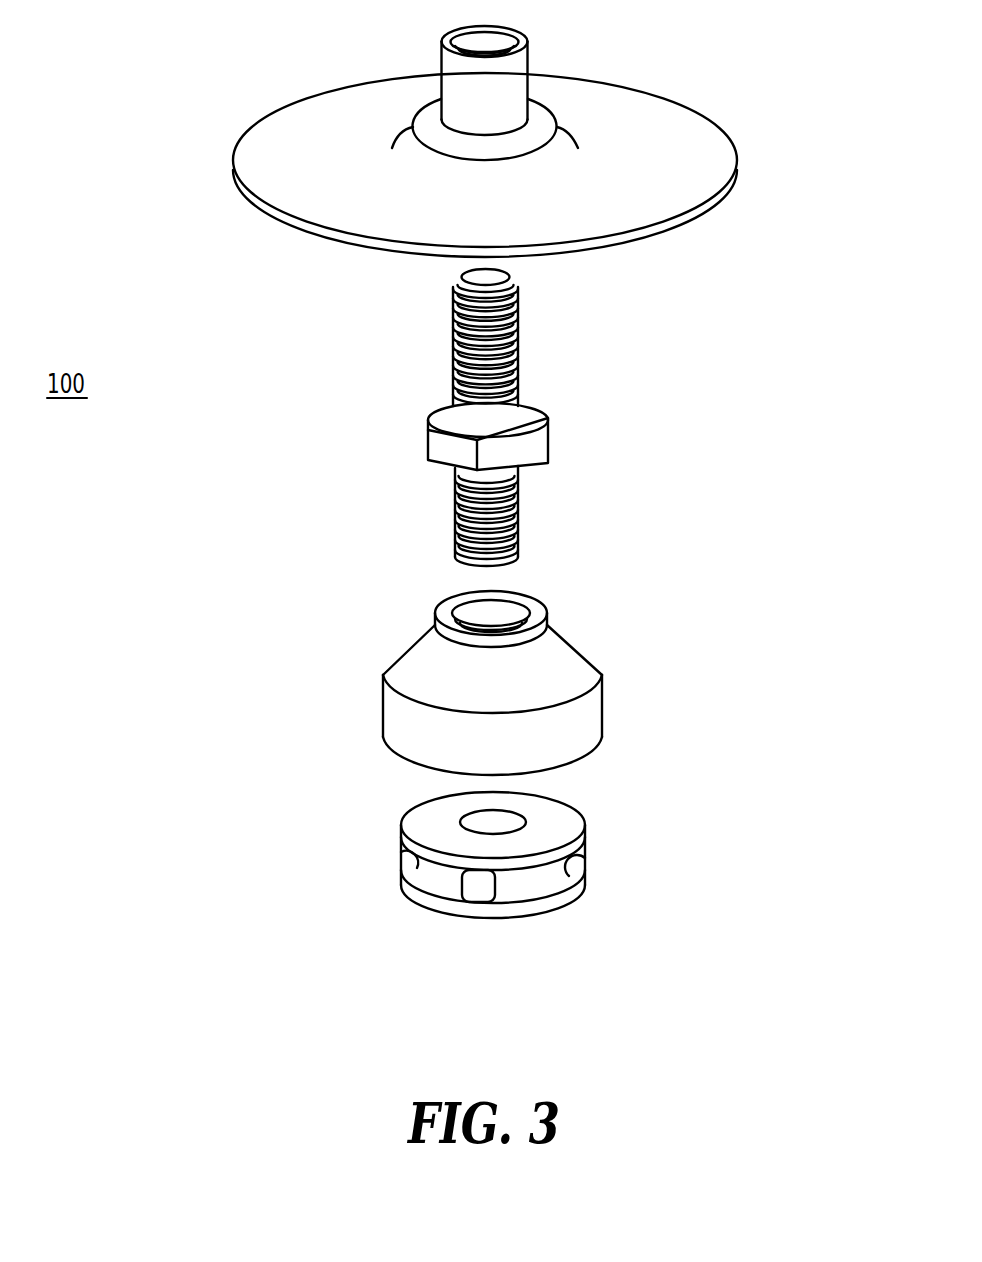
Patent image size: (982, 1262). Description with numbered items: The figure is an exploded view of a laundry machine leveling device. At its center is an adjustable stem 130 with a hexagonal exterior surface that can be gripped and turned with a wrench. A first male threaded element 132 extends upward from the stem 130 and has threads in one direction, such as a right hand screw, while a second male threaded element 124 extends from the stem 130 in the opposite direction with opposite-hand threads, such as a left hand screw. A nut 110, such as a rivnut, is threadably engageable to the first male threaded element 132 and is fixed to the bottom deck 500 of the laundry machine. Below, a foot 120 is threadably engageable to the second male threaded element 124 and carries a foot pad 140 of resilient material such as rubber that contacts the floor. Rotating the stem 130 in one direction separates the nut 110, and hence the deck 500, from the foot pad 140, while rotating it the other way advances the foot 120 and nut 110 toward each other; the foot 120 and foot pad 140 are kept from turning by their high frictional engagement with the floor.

The nut 110 is at (505, 77).
The bottom deck 500 is at (678, 175).
The first male threaded element 132 is at (518, 333).
The adjustable stem 130 is at (542, 440).
The second male threaded element 124 is at (518, 502).
The foot 120 is at (565, 662).
The foot pad 140 is at (565, 820).